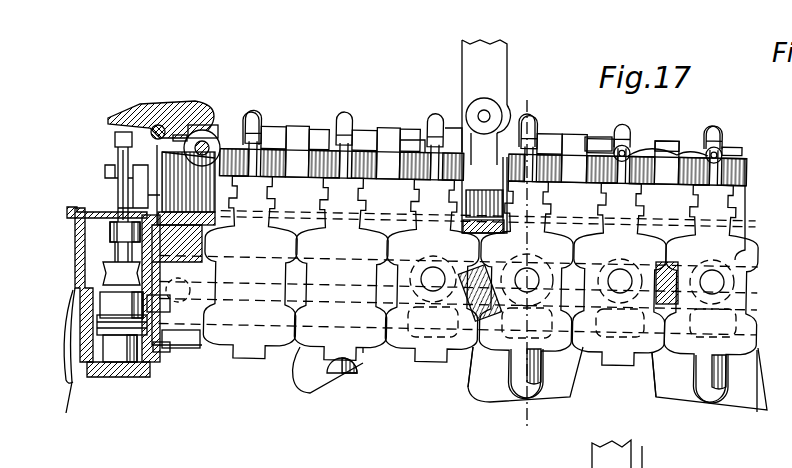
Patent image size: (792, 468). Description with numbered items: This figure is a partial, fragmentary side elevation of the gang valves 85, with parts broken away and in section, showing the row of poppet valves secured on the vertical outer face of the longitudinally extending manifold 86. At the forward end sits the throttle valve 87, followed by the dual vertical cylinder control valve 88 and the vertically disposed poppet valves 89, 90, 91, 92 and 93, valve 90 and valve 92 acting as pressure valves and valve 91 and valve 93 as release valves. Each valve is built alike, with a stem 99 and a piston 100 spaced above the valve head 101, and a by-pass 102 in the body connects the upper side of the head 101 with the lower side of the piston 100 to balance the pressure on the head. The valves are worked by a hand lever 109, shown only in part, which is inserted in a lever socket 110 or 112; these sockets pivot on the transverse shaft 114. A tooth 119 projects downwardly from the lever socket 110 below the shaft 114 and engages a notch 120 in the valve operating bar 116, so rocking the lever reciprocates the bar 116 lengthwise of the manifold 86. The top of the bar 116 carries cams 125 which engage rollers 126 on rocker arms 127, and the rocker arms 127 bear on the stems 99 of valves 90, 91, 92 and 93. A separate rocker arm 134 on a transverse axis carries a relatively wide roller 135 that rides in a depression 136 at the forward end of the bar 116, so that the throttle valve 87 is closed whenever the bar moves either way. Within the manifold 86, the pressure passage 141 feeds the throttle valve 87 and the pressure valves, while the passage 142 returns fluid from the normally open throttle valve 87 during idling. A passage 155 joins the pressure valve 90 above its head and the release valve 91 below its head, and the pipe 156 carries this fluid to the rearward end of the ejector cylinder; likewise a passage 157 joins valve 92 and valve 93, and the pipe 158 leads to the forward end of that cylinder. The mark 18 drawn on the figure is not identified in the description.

The section line 18 is at (543, 422).
The gang valves 85 is at (748, 215).
The manifold 86 is at (762, 333).
The throttle valve 87 is at (113, 378).
The dual vertical cylinder control valve 88 is at (243, 287).
The poppet valve 89 is at (370, 353).
The pressure valve 90 is at (430, 361).
The release valve 91 is at (555, 357).
The pressure valve 92 is at (620, 365).
The release valve 93 is at (767, 373).
The valve stem 99 is at (116, 140).
The piston 100 is at (108, 170).
The valve head 101 is at (103, 373).
The by-pass 102 is at (766, 238).
The hand lever 109 is at (507, 70).
The lever socket 110 is at (503, 110).
The lever socket 112 is at (661, 457).
The transverse shaft 114 is at (477, 110).
The valve operating bar 116 is at (602, 130).
The tooth 119 is at (533, 128).
The notch 120 is at (470, 130).
The cams 125 is at (402, 143).
The rollers 126 is at (625, 140).
The rocker arms 127 is at (717, 133).
The rocker arm 134 is at (202, 103).
The roller 135 is at (227, 133).
The depression 136 is at (236, 130).
The passage 141 is at (220, 340).
The passage 142 is at (233, 330).
The passage 155 is at (477, 347).
The pipe 156 is at (518, 393).
The passage 157 is at (657, 393).
The pipe 158 is at (733, 353).